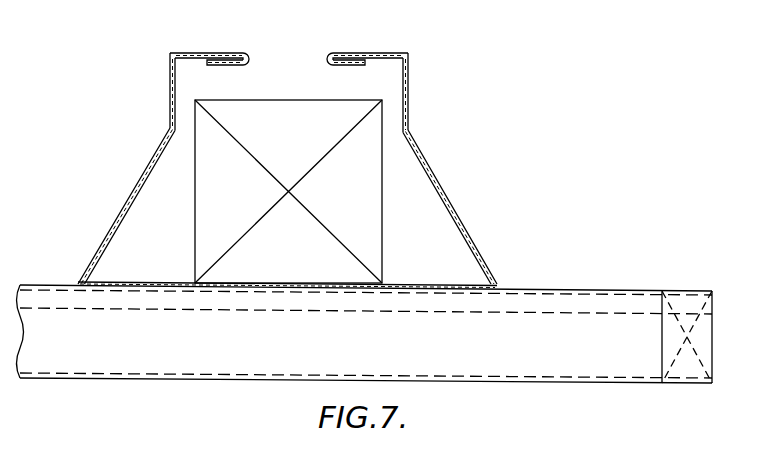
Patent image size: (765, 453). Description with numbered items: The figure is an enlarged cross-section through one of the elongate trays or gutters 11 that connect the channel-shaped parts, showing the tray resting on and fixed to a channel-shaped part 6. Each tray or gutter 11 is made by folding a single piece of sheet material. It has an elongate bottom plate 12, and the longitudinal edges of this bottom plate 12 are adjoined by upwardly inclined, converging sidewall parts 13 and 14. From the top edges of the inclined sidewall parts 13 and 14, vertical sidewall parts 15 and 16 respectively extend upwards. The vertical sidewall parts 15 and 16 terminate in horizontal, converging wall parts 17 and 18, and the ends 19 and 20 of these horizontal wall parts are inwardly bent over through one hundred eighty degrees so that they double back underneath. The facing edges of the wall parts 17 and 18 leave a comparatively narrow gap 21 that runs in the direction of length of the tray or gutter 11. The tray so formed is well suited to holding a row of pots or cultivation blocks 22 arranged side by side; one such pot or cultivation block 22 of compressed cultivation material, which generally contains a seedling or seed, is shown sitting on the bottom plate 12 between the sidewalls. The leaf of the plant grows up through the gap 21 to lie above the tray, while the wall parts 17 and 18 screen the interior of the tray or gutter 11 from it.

The channel-shaped part 6 is at (50, 293).
The tray or gutter 11 is at (298, 151).
The bottom plate 12 is at (411, 283).
The inclined sidewall part 13 is at (127, 201).
The inclined sidewall part 14 is at (470, 237).
The vertical sidewall part 15 is at (170, 88).
The vertical sidewall part 16 is at (410, 93).
The horizontal wall part 17 is at (186, 53).
The horizontal wall part 18 is at (408, 55).
The bent-over end 19 is at (233, 66).
The bent-over end 20 is at (339, 62).
The gap 21 is at (300, 50).
The pot or cultivation block 22 is at (370, 219).